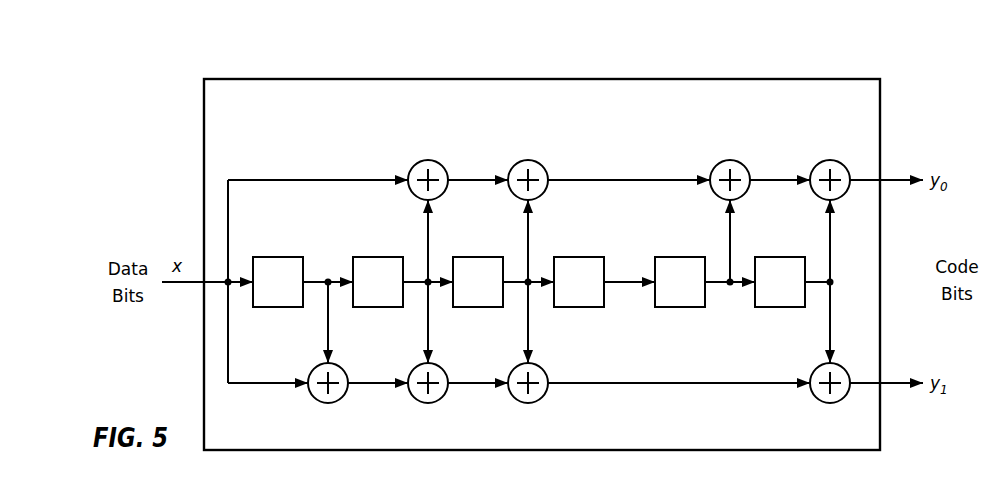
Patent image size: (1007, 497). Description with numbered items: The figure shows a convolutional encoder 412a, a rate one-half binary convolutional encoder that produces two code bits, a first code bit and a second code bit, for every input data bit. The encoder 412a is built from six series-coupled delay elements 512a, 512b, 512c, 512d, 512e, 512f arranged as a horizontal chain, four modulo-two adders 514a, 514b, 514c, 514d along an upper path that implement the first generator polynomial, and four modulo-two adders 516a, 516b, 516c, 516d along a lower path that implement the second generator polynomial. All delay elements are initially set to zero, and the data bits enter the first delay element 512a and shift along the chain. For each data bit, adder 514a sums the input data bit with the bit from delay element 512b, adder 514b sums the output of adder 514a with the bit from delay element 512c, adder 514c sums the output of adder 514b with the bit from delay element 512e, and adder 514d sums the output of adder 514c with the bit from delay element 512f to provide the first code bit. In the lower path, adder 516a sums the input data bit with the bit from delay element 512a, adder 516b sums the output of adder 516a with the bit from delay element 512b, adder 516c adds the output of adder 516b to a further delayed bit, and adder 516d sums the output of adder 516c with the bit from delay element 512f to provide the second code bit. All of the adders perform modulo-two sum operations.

The convolutional encoder 412a is at (540, 79).
The delay element 512a is at (276, 257).
The delay element 512b is at (376, 257).
The delay element 512c is at (476, 257).
The delay element 512d is at (577, 257).
The delay element 512e is at (678, 257).
The delay element 512f is at (778, 257).
The modulo-2 adder 514a is at (428, 161).
The modulo-2 adder 514b is at (528, 161).
The modulo-2 adder 514c is at (730, 161).
The modulo-2 adder 514d is at (830, 161).
The modulo-2 adder 516a is at (326, 403).
The modulo-2 adder 516b is at (426, 403).
The modulo-2 adder 516c is at (526, 403).
The modulo-2 adder 516d is at (828, 403).